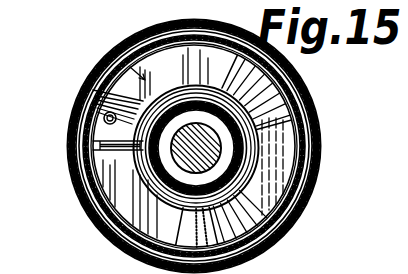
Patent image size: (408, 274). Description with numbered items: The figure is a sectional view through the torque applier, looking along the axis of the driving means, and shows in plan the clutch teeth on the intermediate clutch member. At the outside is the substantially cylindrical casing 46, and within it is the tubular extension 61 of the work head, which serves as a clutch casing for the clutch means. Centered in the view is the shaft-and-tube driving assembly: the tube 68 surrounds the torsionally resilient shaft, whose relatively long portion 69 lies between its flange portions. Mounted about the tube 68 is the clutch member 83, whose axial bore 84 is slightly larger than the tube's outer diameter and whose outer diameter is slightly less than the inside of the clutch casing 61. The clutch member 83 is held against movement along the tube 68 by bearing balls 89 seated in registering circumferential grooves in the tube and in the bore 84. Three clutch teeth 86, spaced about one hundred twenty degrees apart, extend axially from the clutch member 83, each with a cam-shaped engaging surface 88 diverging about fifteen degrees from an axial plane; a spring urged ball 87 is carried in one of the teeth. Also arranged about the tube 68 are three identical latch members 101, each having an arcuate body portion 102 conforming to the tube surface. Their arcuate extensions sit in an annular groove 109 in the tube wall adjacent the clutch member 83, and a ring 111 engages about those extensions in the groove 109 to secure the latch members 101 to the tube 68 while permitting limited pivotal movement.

The casing 46 is at (317, 155).
The tubular extension 61 is at (125, 43).
The tube 68 is at (165, 95).
The long portion of the shaft 69 is at (280, 145).
The clutch member 83 is at (110, 57).
The axial bore 84 is at (187, 68).
The clutch teeth 86 is at (76, 137).
The spring urged ball 87 is at (70, 116).
The engaging surface 88 is at (236, 68).
The bearing balls 89 is at (280, 128).
The latch members 101 is at (270, 180).
The body portion 102 is at (193, 83).
The annular groove 109 is at (163, 204).
The ring 111 is at (112, 244).